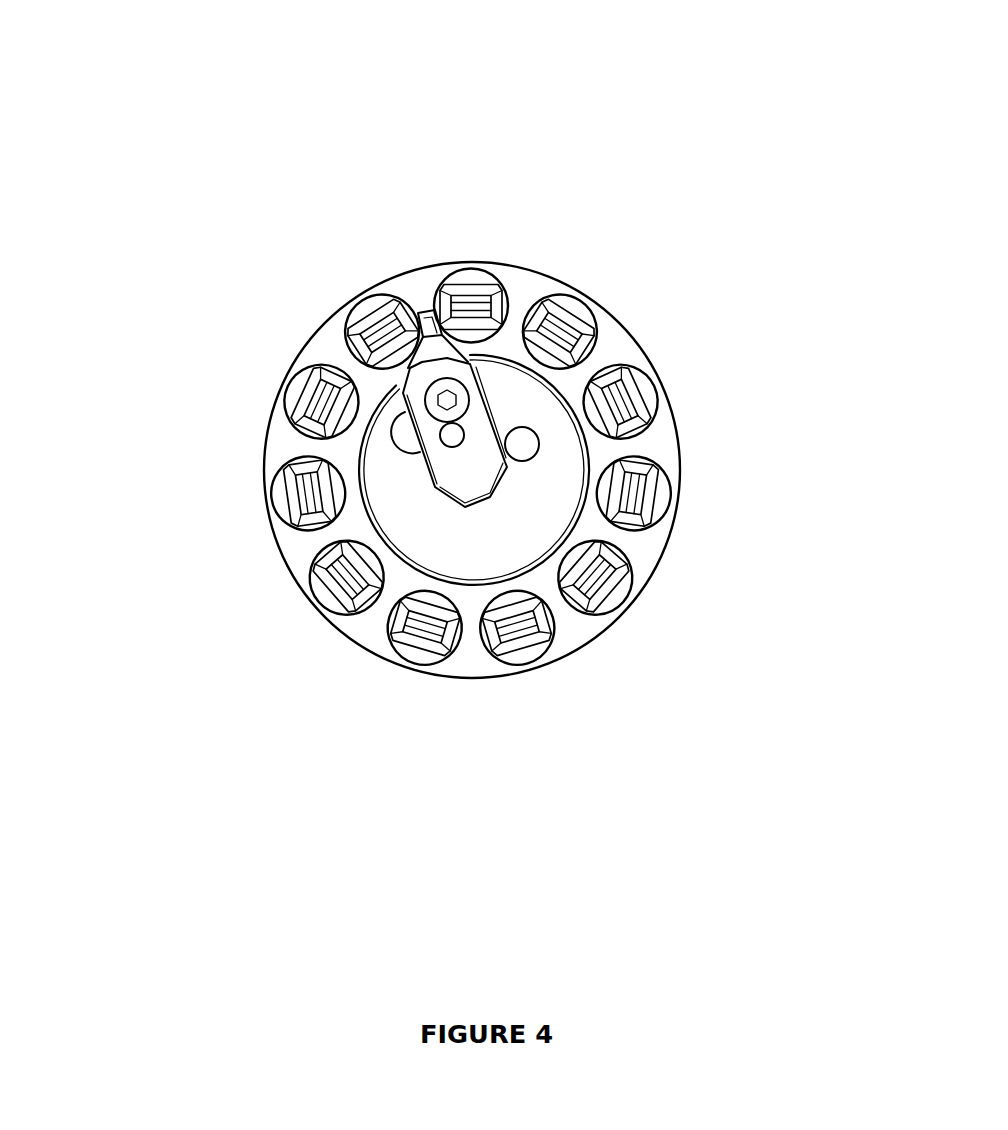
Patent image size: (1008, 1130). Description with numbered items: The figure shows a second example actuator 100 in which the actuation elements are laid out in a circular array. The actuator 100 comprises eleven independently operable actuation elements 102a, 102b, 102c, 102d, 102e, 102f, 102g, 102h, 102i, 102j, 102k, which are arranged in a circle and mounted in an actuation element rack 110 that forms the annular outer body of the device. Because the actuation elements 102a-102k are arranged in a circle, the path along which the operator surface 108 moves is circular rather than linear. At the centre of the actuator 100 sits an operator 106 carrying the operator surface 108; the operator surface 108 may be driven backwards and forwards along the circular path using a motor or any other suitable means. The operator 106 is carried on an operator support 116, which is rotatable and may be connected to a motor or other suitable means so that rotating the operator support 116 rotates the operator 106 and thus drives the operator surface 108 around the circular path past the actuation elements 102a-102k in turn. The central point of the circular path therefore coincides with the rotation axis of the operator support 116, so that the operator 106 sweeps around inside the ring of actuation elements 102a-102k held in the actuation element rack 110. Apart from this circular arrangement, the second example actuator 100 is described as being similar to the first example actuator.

The actuator 100 is at (462, 436).
The actuation element 102a is at (657, 390).
The actuation element 102b is at (583, 307).
The actuation element 102c is at (470, 271).
The actuation element 102d is at (358, 298).
The actuation element 102e is at (288, 392).
The actuation element 102f is at (277, 512).
The actuation element 102g is at (325, 593).
The actuation element 102h is at (395, 635).
The actuation element 102i is at (543, 639).
The actuation element 102j is at (613, 598).
The actuation element 102k is at (669, 495).
The operator 106 is at (503, 472).
The operator surface 108 is at (427, 313).
The actuation element rack 110 is at (275, 431).
The operator support 116 is at (408, 488).